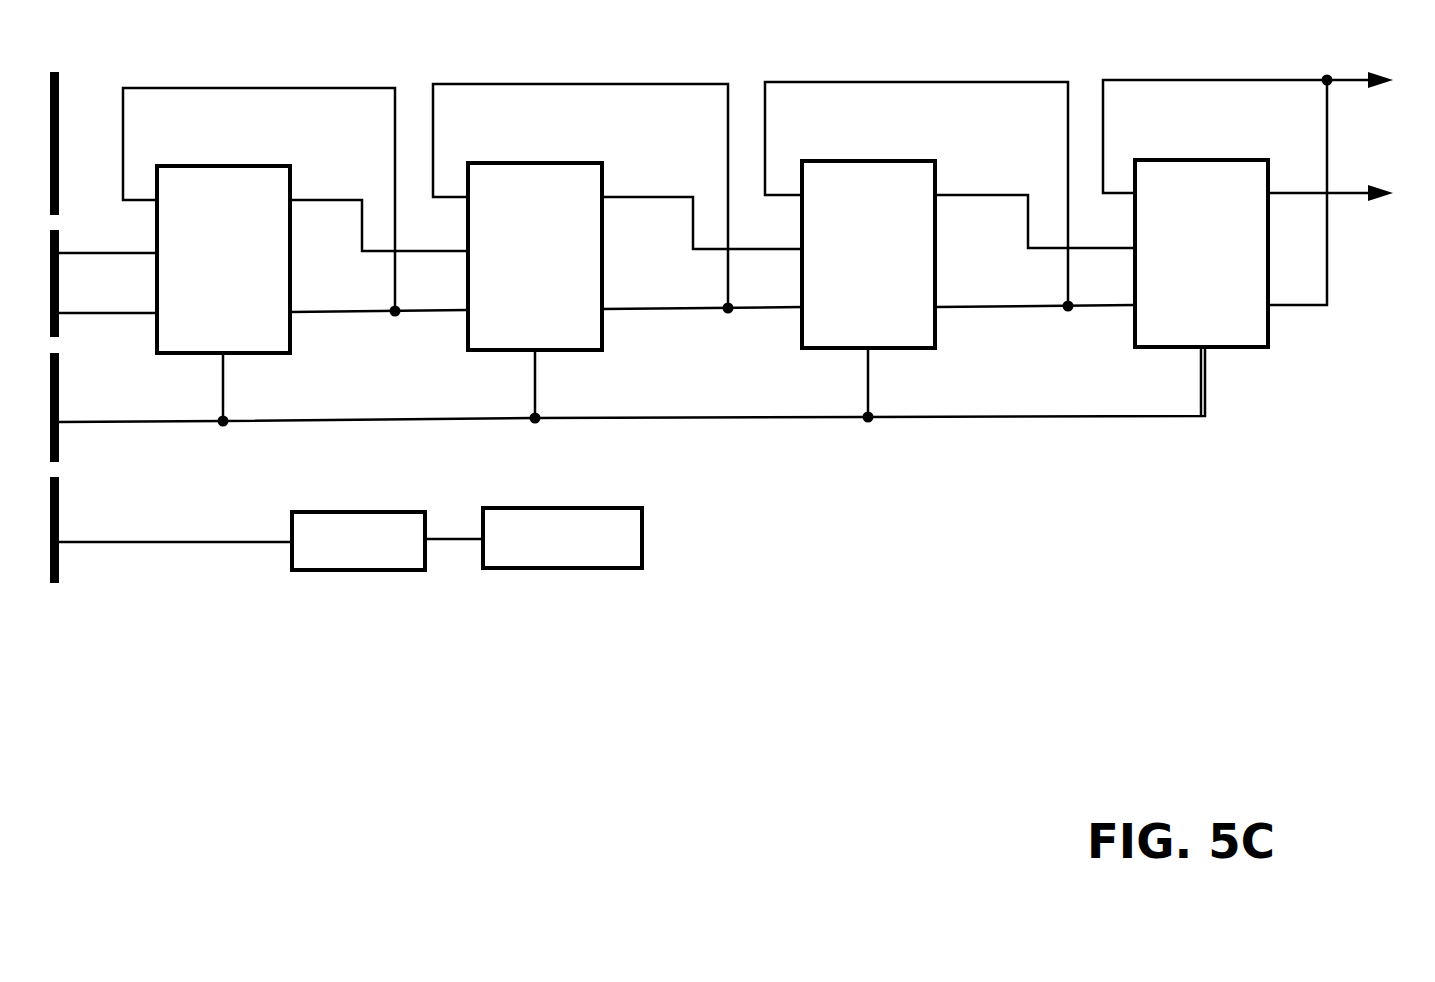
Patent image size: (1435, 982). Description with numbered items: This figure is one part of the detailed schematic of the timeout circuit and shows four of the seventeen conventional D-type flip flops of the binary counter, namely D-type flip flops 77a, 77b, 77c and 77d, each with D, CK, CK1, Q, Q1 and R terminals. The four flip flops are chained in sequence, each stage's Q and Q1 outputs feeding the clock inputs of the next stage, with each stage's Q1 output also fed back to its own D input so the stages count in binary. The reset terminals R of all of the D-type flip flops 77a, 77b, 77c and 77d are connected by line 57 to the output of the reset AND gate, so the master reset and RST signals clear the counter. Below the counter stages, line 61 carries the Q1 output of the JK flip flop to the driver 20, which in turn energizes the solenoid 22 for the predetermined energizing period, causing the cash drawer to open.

The D-type flip flop 77a is at (266, 166).
The D-type flip flop 77b is at (589, 163).
The D-type flip flop 77c is at (918, 161).
The D-type flip flop 77d is at (1241, 160).
The line 57 is at (652, 418).
The line 61 is at (168, 542).
The driver 20 is at (413, 512).
The solenoid 22 is at (628, 508).